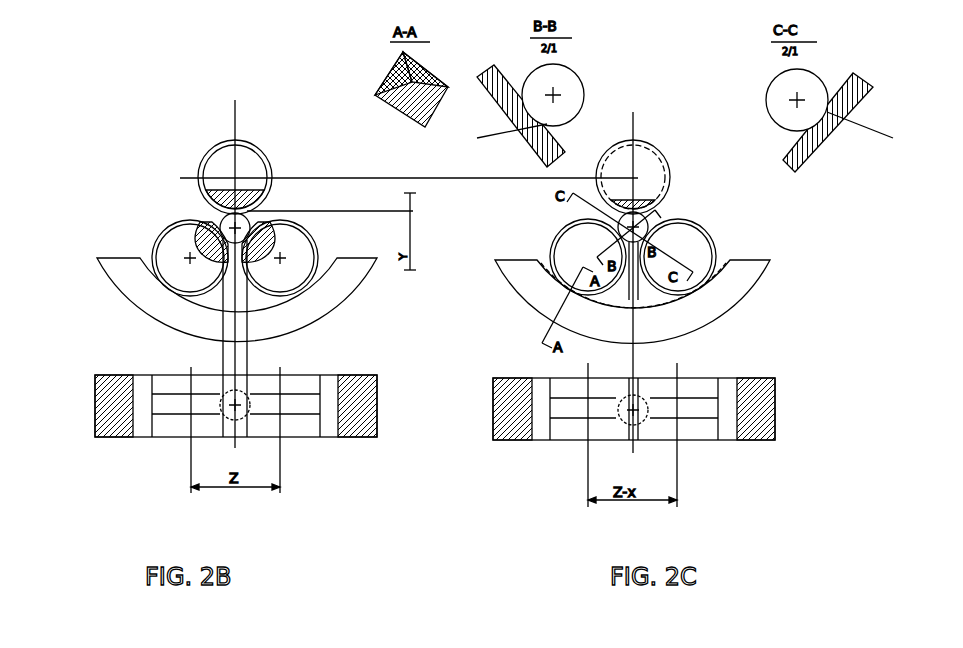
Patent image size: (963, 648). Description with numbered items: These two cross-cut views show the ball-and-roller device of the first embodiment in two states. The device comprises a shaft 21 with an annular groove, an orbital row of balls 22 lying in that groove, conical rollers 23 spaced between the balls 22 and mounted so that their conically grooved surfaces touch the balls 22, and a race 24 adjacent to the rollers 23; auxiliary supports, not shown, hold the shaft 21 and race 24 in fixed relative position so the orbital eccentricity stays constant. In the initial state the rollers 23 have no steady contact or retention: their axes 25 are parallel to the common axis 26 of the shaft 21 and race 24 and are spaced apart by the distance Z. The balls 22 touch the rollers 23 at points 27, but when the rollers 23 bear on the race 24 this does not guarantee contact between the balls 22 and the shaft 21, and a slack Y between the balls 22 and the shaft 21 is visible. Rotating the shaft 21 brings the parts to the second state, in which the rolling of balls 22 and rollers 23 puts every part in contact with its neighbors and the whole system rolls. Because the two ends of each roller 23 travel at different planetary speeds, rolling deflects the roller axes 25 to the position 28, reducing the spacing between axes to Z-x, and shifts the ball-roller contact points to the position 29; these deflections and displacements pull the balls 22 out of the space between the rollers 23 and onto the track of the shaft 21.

In FIG. 2B, the shaft 21 is at (223, 167).
In FIG. 2C, the shaft 21 is at (640, 166).
In FIG. 2B, the balls 22 is at (223, 223).
In FIG. 2C, the balls 22 is at (643, 225).
In FIG. 2B, the conical rollers 23 is at (180, 240).
In FIG. 2C, the conical rollers 23 is at (582, 243).
In FIG. 2B, the race 24 is at (125, 277).
In FIG. 2C, the race 24 is at (537, 287).
In FIG. 2B, the axes of rollers 25 is at (190, 452).
In FIG. 2B, the axis of shaft and race 26 is at (236, 100).
In FIG. 2C, the axis of shaft and race 26 is at (633, 122).
In FIG. 2B, the contact points 27 is at (227, 260).
In FIG. 2C, the deflected axis position 28 is at (587, 457).
In FIG. 2C, the displaced contact point position 29 is at (643, 410).